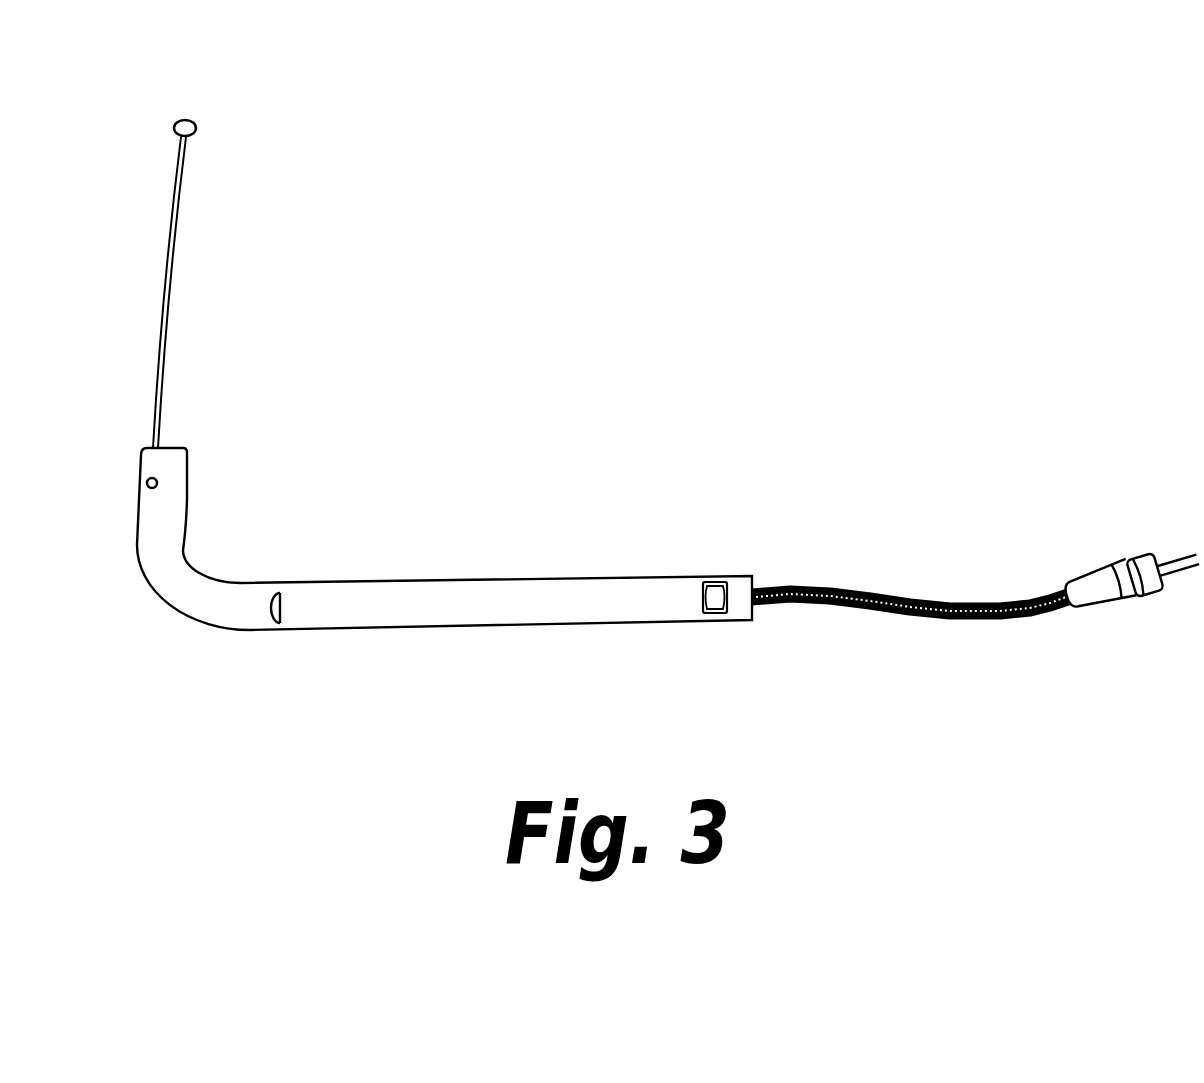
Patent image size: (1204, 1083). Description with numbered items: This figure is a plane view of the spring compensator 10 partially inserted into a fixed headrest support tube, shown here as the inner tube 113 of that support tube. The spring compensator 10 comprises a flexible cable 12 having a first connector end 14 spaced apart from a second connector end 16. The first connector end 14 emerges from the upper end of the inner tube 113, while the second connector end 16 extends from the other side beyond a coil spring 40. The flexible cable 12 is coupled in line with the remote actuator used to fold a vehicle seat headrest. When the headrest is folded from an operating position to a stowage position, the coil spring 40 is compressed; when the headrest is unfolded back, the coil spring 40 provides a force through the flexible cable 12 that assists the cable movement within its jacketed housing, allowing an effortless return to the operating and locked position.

The spring compensator 10 is at (1027, 528).
The flexible cable 12 is at (162, 358).
The first connector end 14 is at (200, 122).
The second connector end 16 is at (1125, 610).
The coil spring 40 is at (898, 593).
The inner tube 113 is at (578, 575).